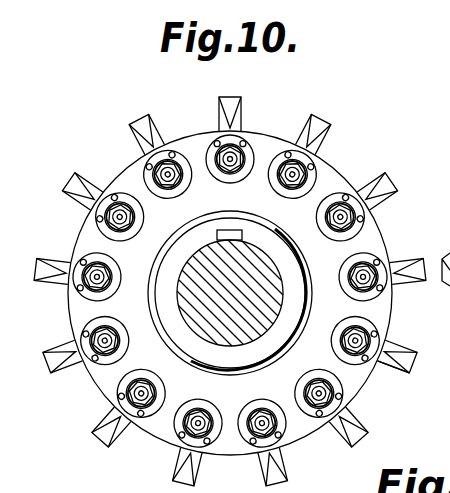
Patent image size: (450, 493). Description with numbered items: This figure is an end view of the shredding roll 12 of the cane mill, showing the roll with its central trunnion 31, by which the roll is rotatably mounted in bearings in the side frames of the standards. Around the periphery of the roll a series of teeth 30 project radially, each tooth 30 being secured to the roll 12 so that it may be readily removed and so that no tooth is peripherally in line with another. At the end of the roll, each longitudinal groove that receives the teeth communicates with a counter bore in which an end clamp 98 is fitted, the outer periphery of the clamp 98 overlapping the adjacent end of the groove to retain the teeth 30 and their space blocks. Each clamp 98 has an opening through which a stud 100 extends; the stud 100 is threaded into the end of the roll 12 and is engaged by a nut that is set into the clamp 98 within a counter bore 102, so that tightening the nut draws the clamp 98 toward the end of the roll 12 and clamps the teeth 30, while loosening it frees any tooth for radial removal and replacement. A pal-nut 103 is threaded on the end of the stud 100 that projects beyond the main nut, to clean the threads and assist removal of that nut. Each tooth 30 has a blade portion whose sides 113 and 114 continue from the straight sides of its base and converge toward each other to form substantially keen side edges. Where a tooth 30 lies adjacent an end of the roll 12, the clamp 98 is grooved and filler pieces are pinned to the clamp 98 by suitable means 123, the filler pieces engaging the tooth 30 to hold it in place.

The shredding roll 12 is at (234, 90).
The teeth 30 is at (379, 181).
The trunnions 31 is at (205, 318).
The end clamp 98 is at (350, 287).
The stud 100 is at (390, 258).
The counter bore 102 is at (351, 273).
The pal-nut 103 is at (379, 259).
The side of the blade portion 113 is at (398, 368).
The side of the blade portion 114 is at (406, 346).
The pinning means 123 is at (352, 399).